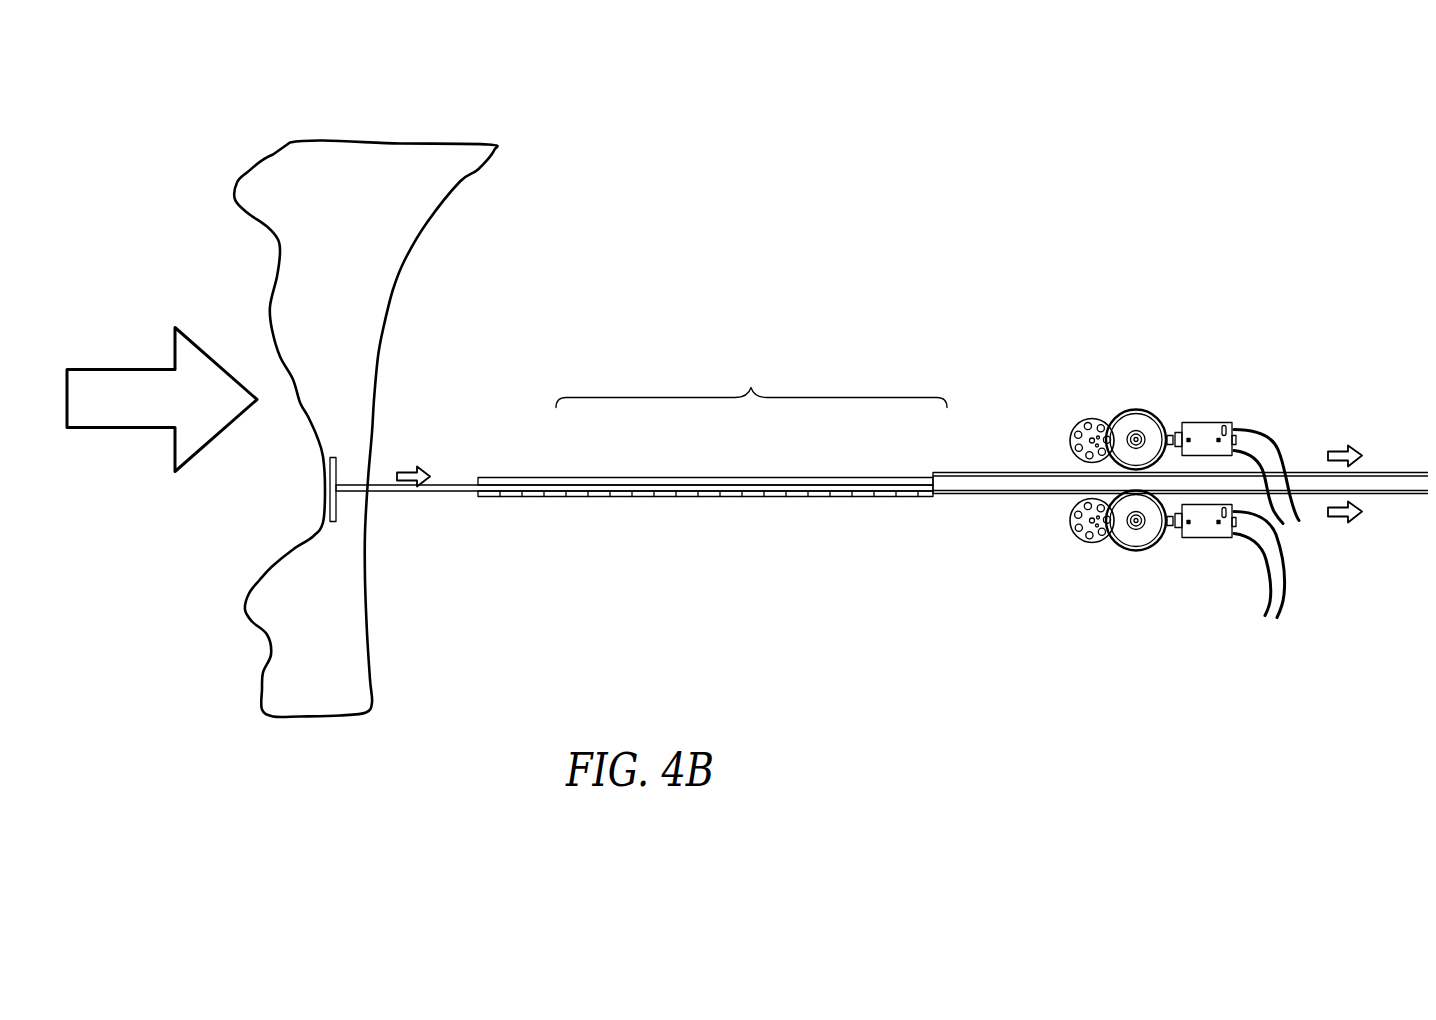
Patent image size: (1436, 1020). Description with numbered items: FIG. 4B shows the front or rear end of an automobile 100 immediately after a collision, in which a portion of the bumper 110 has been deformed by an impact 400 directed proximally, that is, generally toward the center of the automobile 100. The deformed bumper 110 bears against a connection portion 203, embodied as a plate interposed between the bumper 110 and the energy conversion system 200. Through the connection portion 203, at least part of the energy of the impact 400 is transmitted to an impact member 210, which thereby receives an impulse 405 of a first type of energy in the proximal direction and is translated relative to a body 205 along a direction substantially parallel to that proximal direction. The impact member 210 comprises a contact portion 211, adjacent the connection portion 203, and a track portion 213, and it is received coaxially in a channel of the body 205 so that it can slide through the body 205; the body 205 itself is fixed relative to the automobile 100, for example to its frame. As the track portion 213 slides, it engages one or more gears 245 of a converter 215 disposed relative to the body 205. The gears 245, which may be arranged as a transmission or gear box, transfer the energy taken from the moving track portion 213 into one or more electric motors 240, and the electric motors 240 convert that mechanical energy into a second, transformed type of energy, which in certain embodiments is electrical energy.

The automobile 100 is at (892, 126).
The bumper 110 is at (281, 151).
The energy conversion system 200 is at (1146, 311).
The connection portion 203 is at (337, 507).
The body 205 is at (693, 497).
The impact member 210 is at (751, 383).
The contact portion 211 is at (535, 492).
The track portion 213 is at (950, 473).
The converter 215 is at (1173, 375).
The electric motor 240 is at (1208, 423).
The gear 245 is at (1067, 410).
The impact 400 is at (110, 360).
The impulse 405 is at (404, 466).